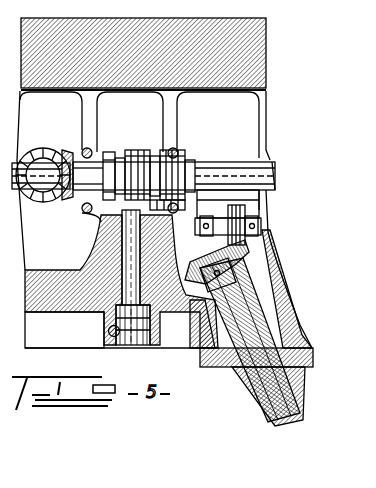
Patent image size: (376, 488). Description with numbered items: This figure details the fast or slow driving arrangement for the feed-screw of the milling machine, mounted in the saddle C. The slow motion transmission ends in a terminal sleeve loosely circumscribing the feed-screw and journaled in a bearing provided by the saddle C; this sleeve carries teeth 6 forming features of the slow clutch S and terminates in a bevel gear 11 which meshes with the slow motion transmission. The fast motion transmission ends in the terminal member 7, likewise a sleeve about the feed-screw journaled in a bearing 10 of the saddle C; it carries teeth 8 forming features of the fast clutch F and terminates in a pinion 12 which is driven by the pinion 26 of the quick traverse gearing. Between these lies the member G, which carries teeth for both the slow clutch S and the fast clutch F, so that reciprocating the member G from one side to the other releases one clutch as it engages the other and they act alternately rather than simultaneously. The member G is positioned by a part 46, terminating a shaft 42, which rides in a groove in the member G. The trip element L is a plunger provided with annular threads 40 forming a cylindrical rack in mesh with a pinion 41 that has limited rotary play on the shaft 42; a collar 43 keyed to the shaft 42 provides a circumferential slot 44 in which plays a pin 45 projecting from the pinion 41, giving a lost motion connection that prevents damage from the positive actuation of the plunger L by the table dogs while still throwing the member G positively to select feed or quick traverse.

The saddle C is at (266, 72).
The bevel gear 11 is at (68, 152).
The terminal member of the fast motion transmission 7 is at (230, 173).
The teeth 6 is at (104, 152).
The slow clutch S is at (118, 157).
The member G is at (130, 160).
The fast clutch F is at (146, 160).
The part 46 is at (141, 157).
The bearing 10 is at (178, 162).
The pinion 12 is at (198, 166).
The teeth 8 is at (176, 224).
The shaft 42 is at (128, 246).
The collar 43 is at (83, 243).
The trip element L is at (112, 330).
The annular threads 40 is at (108, 338).
The pinion 41 is at (150, 340).
The pinion 26 is at (216, 212).
The pin 45 is at (217, 294).
The circumferential slot 44 is at (112, 326).